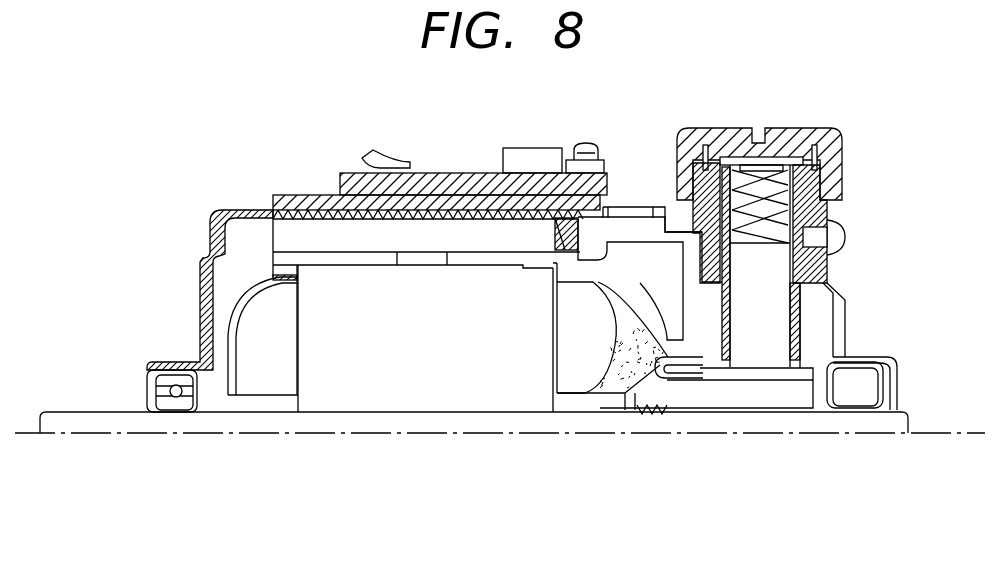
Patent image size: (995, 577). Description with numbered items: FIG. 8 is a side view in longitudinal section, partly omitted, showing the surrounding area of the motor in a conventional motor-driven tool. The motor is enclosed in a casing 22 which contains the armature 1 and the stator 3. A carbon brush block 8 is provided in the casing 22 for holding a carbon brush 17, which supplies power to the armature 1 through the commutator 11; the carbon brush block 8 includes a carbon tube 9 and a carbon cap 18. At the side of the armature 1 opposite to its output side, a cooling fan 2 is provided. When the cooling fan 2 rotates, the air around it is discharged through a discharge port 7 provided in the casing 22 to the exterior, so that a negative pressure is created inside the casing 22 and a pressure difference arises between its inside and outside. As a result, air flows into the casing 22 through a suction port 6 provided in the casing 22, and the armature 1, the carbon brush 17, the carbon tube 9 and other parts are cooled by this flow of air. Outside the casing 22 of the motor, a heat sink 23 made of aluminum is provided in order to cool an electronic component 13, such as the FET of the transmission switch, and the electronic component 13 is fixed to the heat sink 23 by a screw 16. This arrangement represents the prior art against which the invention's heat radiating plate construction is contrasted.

The armature 1 is at (428, 398).
The cooling fan 2 is at (677, 322).
The stator 3 is at (485, 237).
The suction port 6 is at (262, 213).
The discharge port 7 is at (627, 207).
The carbon brush block 8 is at (680, 225).
The carbon tube 9 is at (823, 290).
The commutator 11 is at (797, 400).
The electronic component 13 is at (520, 152).
The screw 16 is at (588, 148).
The carbon brush 17 is at (763, 357).
The carbon cap 18 is at (808, 128).
The casing 22 is at (215, 212).
The heat sink 23 is at (355, 168).